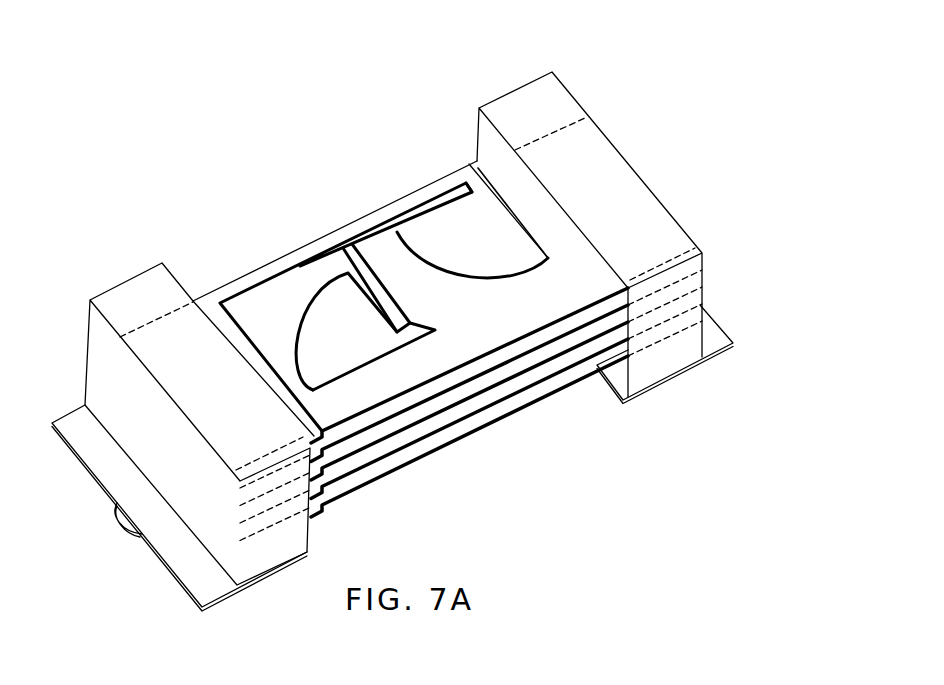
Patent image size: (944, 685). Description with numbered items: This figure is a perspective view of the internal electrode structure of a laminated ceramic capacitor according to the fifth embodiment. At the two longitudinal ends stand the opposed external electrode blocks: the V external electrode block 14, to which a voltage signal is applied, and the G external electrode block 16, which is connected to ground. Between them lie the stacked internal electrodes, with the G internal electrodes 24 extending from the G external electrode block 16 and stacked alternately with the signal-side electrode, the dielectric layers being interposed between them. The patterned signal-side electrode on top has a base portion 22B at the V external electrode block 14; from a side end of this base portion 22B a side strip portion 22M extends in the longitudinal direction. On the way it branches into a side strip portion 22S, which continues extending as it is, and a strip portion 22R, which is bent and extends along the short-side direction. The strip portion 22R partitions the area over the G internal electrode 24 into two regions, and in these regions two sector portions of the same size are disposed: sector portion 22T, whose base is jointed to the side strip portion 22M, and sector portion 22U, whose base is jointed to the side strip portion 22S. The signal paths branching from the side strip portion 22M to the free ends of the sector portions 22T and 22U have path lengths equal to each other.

The V external electrode block 14 is at (133, 293).
The G external electrode block 16 is at (525, 97).
The base portion 22B is at (176, 386).
The side strip portion 22M is at (269, 270).
The side strip portion 22S is at (408, 200).
The strip portion 22R is at (420, 323).
The sector portion 22T is at (360, 356).
The sector portion 22U is at (529, 260).
The G internal electrode 24 is at (600, 288).